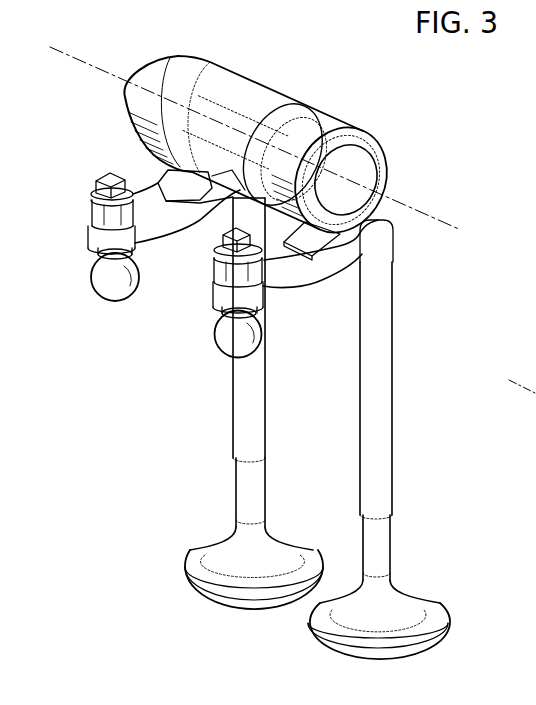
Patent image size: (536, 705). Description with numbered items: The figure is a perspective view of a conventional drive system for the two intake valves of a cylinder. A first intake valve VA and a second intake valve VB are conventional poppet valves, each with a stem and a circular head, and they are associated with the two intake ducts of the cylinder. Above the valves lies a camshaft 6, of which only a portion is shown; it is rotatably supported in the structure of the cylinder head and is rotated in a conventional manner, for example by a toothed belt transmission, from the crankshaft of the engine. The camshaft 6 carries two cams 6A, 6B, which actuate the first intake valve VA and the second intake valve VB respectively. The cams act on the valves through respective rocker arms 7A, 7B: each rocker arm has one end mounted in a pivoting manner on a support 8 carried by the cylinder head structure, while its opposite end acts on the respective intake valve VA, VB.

The camshaft 6 is at (270, 69).
The cam 6A is at (140, 95).
The cam 6B is at (357, 126).
The rocker arm 7A is at (162, 226).
The rocker arm 7B is at (328, 263).
The support 8 is at (110, 290).
The first intake valve VA is at (228, 492).
The second intake valve VB is at (400, 536).